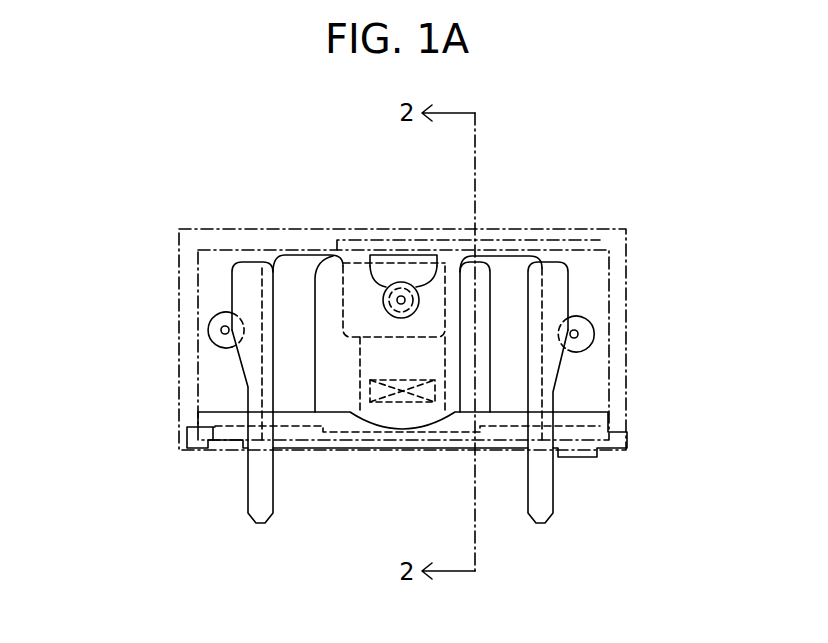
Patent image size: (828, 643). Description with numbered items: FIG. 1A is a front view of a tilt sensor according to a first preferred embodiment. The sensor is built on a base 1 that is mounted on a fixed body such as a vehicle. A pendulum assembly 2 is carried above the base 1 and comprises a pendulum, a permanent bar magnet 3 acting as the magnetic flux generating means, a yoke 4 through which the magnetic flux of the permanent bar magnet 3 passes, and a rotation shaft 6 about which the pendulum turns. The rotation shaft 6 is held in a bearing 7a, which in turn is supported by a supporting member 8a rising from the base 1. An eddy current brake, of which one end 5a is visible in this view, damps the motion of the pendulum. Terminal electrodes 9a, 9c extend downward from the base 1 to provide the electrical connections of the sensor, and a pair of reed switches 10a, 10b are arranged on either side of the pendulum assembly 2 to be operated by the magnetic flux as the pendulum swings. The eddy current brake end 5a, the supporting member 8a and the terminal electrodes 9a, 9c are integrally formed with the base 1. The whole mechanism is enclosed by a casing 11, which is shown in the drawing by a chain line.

The base 1 is at (573, 440).
The pendulum assembly 2 is at (448, 280).
The permanent bar magnet 3 is at (404, 395).
The yoke 4 is at (390, 255).
The end of eddy current brake 5a is at (298, 275).
The rotation shaft 6 is at (400, 296).
The bearing 7a is at (418, 288).
The supporting member 8a is at (357, 275).
The terminal electrode 9a is at (258, 497).
The terminal electrode 9c is at (545, 498).
The reed switch 10a is at (213, 324).
The reed switch 10b is at (590, 327).
The casing 11 is at (595, 238).